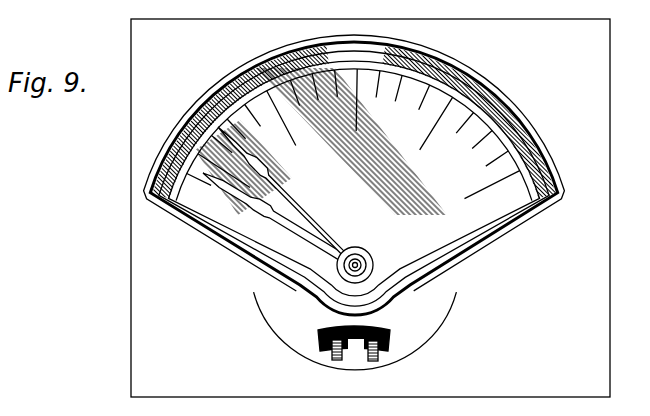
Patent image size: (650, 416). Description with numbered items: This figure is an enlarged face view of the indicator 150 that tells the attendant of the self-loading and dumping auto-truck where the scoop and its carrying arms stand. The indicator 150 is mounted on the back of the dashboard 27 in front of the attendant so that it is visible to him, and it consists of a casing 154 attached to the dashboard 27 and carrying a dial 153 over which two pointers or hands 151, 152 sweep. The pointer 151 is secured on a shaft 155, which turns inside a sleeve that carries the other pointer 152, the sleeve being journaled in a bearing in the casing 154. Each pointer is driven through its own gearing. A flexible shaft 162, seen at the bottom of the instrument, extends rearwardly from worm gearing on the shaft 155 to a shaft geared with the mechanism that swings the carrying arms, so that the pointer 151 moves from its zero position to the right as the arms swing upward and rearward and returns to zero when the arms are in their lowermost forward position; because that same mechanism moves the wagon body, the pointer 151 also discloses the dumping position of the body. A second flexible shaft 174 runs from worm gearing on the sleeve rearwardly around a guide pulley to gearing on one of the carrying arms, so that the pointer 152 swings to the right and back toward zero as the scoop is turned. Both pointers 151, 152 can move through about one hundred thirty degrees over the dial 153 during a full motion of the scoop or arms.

The dashboard 27 is at (602, 162).
The indicator 150 is at (354, 202).
The pointer 151 is at (283, 192).
The pointer 152 is at (274, 217).
The dial 153 is at (510, 165).
The casing 154 is at (490, 243).
The shaft 155 is at (370, 238).
The flexible shaft 162 is at (333, 355).
The flexible shaft 174 is at (378, 358).